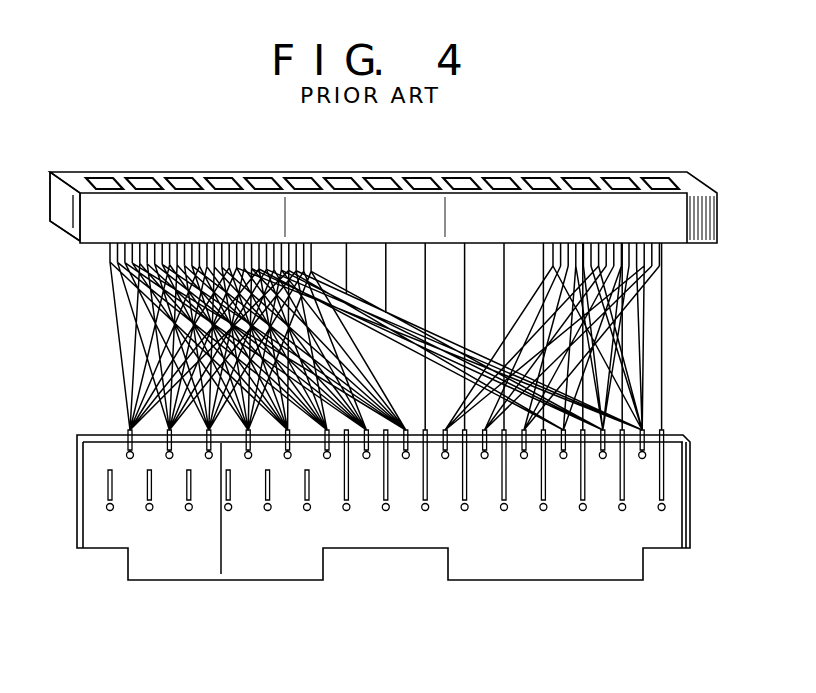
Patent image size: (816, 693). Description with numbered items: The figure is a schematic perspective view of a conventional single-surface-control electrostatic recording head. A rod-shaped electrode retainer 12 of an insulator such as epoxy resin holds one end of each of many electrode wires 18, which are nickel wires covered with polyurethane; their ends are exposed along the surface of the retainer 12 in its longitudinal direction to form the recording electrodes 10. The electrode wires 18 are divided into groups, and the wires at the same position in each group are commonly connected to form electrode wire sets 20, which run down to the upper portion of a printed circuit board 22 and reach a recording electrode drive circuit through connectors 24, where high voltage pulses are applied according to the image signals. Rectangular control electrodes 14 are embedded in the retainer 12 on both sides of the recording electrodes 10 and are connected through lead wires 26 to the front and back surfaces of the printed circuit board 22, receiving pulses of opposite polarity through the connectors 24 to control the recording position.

The recording electrodes 10 is at (166, 175).
The electrode retainer 12 is at (66, 236).
The control electrodes 14 is at (302, 174).
The electrode wires 18 is at (120, 356).
The electrode wire sets 20 is at (128, 425).
The printed circuit board 22 is at (692, 467).
The connectors 24 is at (212, 580).
The lead wires 26 is at (666, 385).